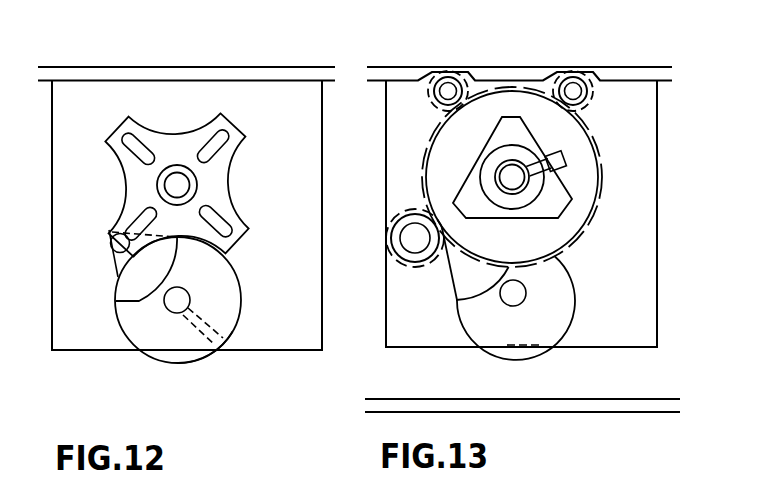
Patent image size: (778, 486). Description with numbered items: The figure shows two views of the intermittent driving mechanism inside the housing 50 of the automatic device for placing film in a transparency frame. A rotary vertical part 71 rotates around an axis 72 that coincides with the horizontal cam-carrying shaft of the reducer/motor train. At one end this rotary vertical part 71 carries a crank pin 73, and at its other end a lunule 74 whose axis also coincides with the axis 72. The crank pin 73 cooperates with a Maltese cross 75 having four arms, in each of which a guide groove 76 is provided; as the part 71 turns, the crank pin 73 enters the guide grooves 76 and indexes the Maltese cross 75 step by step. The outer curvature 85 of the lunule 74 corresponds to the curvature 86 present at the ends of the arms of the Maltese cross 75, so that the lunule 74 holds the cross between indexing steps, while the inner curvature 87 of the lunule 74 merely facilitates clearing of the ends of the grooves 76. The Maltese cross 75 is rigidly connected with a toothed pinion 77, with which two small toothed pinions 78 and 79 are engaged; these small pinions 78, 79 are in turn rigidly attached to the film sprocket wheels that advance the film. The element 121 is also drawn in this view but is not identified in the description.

In FIG. 12, the housing 50 is at (213, 77).
In FIG. 13, the housing 50 is at (623, 404).
In FIG. 12, the rotary vertical part 71 is at (160, 342).
In FIG. 12, the axis 72 is at (179, 299).
In FIG. 13, the axis 72 is at (513, 293).
In FIG. 12, the crank pin 73 is at (113, 255).
In FIG. 12, the lunule 74 is at (193, 362).
In FIG. 13, the lunule 74 is at (502, 332).
In FIG. 12, the Maltese cross 75 is at (128, 189).
In FIG. 12, the guide grooves 76 is at (132, 142).
In FIG. 13, the toothed pinion 77 is at (425, 160).
In FIG. 13, the small toothed pinion 78 is at (440, 70).
In FIG. 13, the small toothed pinion 79 is at (565, 70).
In FIG. 12, the outer curvature 85 is at (220, 340).
In FIG. 12, the curvature 86 is at (228, 184).
In FIG. 12, the inner curvature 87 is at (140, 300).
In FIG. 13, the roller 121 is at (400, 263).